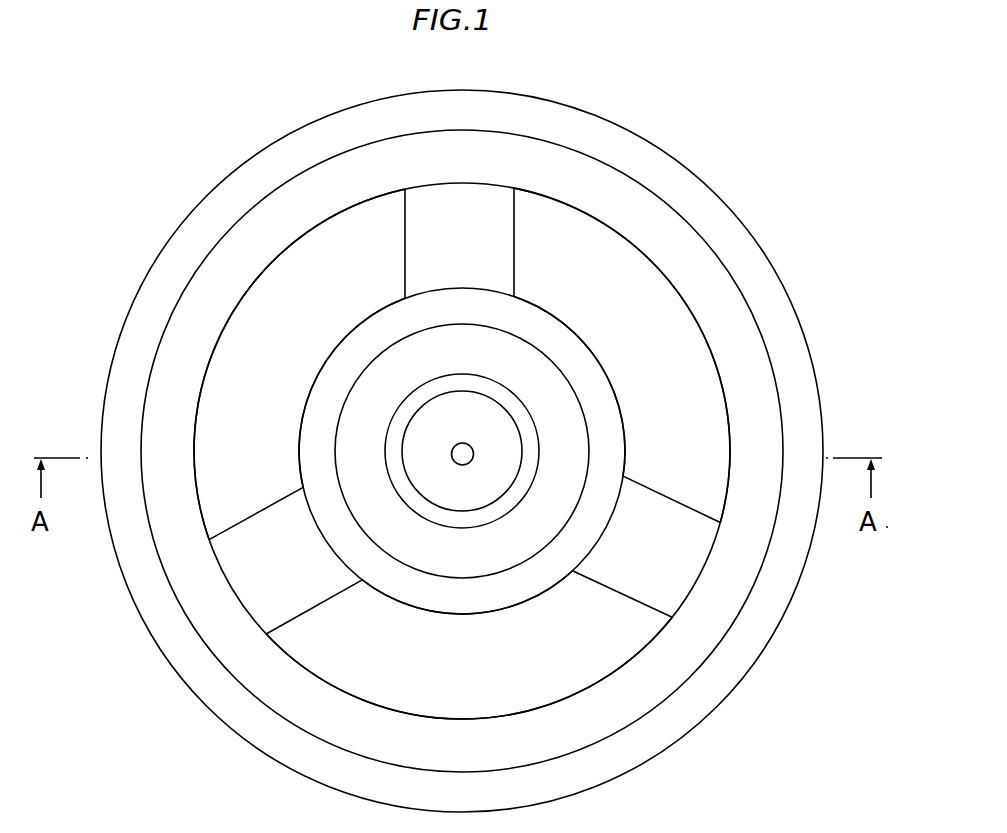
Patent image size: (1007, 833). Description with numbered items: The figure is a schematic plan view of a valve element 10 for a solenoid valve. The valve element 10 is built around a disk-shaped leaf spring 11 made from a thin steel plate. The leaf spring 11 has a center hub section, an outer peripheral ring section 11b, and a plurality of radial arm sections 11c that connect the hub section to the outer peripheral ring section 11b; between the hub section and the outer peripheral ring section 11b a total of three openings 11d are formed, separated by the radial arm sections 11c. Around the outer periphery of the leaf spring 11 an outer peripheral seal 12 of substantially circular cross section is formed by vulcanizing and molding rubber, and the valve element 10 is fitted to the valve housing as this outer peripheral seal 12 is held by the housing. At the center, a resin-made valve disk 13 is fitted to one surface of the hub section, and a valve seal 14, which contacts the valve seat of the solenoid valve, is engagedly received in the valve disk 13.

The valve element 10 is at (690, 133).
The leaf spring 11 is at (732, 592).
The outer peripheral ring section 11b is at (487, 733).
The radial arm sections 11c is at (492, 248).
The openings 11d is at (692, 348).
The outer peripheral seal 12 is at (758, 265).
The valve disk 13 is at (368, 393).
The valve seal 14 is at (452, 497).